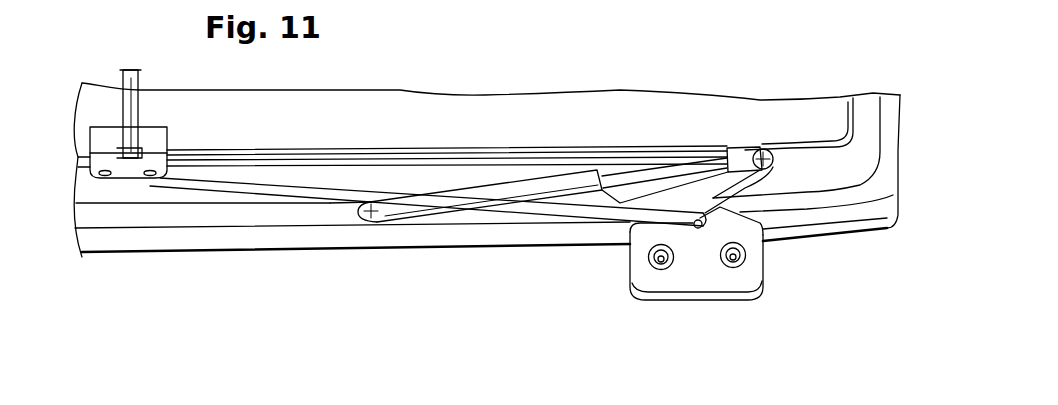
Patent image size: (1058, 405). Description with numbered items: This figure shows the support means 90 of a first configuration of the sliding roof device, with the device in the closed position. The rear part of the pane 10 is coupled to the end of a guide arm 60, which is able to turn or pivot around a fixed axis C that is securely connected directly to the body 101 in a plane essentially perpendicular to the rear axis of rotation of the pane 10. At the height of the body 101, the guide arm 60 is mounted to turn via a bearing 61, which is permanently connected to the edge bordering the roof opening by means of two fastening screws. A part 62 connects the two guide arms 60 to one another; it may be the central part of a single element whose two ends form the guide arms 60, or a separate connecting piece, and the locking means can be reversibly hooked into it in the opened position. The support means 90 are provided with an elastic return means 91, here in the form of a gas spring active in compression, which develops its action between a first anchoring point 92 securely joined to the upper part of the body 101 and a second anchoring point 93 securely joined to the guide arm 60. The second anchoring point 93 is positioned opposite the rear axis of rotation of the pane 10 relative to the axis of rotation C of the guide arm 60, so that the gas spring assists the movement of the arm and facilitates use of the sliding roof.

The pane 10 is at (437, 122).
The guide arm 60 is at (238, 183).
The bearing 61 is at (677, 275).
The connecting part 62 is at (127, 107).
The support means 90 is at (638, 150).
The elastic return means 91 is at (555, 183).
The first anchoring point 92 is at (357, 200).
The second anchoring point 93 is at (767, 140).
The body 101 is at (473, 232).
The fixed axis C is at (699, 230).